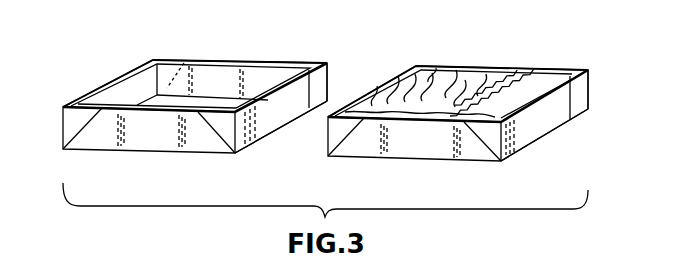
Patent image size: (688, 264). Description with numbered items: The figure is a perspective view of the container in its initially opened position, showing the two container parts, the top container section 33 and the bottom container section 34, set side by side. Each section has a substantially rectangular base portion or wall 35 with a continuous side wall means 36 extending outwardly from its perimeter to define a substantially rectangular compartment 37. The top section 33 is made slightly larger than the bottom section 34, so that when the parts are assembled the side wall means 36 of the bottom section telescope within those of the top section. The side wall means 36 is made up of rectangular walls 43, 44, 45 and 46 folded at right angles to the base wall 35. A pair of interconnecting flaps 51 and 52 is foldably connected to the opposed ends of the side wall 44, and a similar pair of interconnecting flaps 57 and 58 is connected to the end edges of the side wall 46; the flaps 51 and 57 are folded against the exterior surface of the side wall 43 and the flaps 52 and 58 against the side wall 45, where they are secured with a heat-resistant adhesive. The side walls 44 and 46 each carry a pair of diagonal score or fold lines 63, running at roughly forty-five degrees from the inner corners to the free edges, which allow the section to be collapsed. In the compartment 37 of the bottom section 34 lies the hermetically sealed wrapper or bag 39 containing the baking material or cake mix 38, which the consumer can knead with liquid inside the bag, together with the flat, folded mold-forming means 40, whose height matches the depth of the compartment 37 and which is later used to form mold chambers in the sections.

The top container section 33 is at (188, 140).
The bottom container section 34 is at (433, 144).
The base portion or wall 35 is at (200, 101).
The side wall means 36 is at (258, 80).
The compartment 37 is at (308, 78).
The baking material or cake mix 38 is at (433, 80).
The wrapper or bag 39 is at (472, 88).
The mold-forming means 40 is at (551, 80).
The side wall 43 is at (109, 95).
The side wall 44 is at (199, 100).
The side wall 45 is at (278, 111).
The side wall 46 is at (137, 138).
The interconnecting flap 51 is at (133, 72).
The interconnecting flap 52 is at (328, 80).
The interconnecting flap 57 is at (75, 101).
The interconnecting flap 58 is at (237, 154).
The diagonal score or fold lines 63 is at (177, 63).